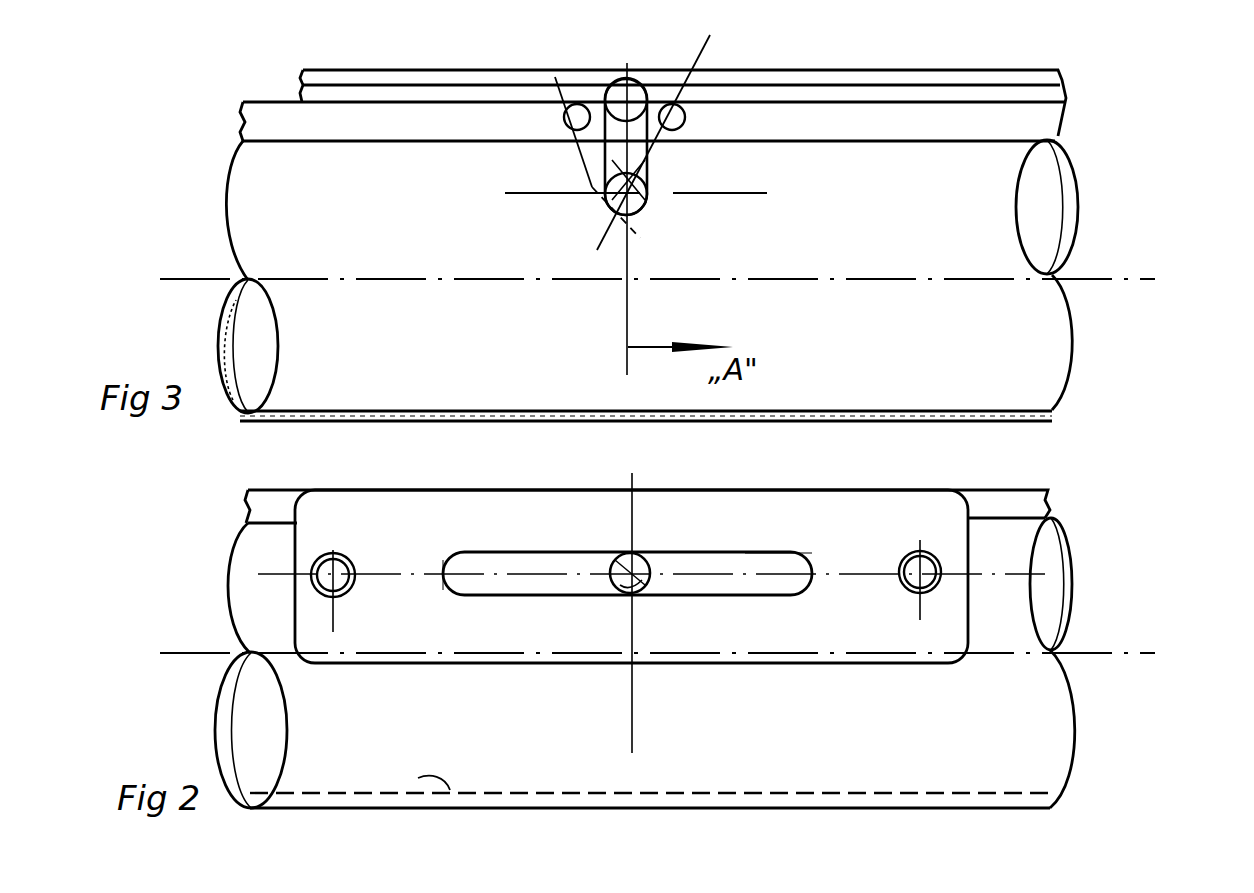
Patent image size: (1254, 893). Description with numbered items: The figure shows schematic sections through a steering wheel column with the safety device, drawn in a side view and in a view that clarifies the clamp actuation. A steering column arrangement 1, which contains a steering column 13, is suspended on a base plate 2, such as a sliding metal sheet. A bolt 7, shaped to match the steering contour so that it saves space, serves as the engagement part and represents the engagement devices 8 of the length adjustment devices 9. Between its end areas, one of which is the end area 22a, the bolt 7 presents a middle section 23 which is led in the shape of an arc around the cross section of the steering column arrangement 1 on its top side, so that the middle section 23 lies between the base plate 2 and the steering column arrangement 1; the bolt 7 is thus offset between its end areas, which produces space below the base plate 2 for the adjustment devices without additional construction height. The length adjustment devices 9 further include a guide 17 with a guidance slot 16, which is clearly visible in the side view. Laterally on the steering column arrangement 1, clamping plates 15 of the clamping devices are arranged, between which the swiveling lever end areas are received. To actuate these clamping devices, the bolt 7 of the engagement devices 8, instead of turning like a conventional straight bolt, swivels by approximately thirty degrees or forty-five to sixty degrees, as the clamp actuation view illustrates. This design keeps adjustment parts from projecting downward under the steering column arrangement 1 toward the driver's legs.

In FIG. 3, the steering column arrangement 1 is at (1030, 350).
In FIG. 2, the steering column arrangement 1 is at (200, 730).
In FIG. 3, the base plate 2 is at (893, 70).
In FIG. 3, the bolt 7 is at (683, 120).
In FIG. 2, the bolt 7 is at (630, 595).
In FIG. 3, the engagement devices 8 is at (540, 155).
In FIG. 2, the engagement devices 8 is at (640, 548).
In FIG. 3, the length adjustment devices 9 is at (598, 212).
In FIG. 2, the length adjustment devices 9 is at (447, 600).
In FIG. 3, the steering column 13 is at (233, 400).
In FIG. 2, the steering column 13 is at (450, 790).
In FIG. 2, the clamping plates 15 is at (407, 517).
In FIG. 2, the guidance slot 16 is at (737, 592).
In FIG. 2, the guide 17 is at (772, 567).
In FIG. 3, the end area 22a is at (633, 203).
In FIG. 2, the end area 22a is at (634, 594).
In FIG. 3, the middle section 23 is at (628, 70).